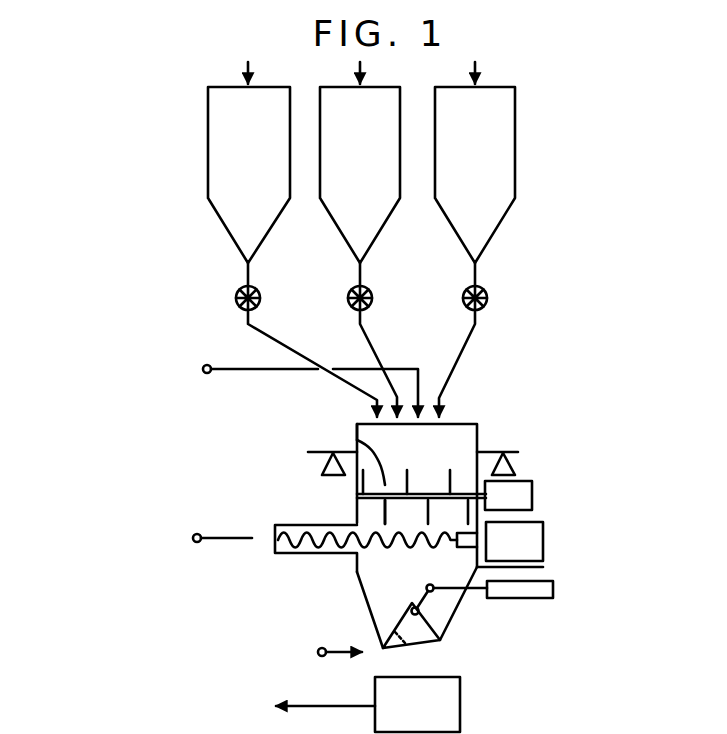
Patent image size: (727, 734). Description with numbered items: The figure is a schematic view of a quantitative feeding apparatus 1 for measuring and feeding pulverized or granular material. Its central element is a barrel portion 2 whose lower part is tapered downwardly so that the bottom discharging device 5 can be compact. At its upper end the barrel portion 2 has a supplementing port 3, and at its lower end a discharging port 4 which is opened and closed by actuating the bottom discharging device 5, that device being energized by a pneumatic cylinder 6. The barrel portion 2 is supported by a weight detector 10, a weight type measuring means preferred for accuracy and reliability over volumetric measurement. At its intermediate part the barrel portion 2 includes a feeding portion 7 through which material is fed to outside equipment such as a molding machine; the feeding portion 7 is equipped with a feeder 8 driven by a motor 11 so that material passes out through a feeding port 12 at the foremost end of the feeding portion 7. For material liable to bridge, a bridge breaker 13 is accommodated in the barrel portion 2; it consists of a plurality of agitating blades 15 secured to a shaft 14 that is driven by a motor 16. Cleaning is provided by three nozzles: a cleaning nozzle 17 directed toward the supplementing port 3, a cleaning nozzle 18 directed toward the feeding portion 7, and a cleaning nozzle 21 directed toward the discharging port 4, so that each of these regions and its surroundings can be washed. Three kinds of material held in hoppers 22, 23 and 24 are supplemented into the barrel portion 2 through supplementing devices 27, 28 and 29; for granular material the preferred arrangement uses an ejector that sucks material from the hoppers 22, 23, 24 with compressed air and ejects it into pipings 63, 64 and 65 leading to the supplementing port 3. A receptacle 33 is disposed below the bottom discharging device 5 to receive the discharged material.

The quantitative feeding apparatus 1 is at (470, 415).
The barrel portion 2 is at (478, 430).
The supplementing port 3 is at (359, 424).
The discharging port 4 is at (420, 645).
The bottom discharging device 5 is at (440, 637).
The pneumatic cylinder 6 is at (540, 592).
The feeding portion 7 is at (320, 555).
The feeder 8 is at (400, 545).
The weight detector 10 is at (320, 468).
The motor 11 is at (535, 538).
The feeding port 12 is at (275, 540).
The bridge breaker 13 is at (357, 440).
The shaft 14 is at (357, 505).
The agitating blades 15 is at (385, 517).
The motor 16 is at (532, 494).
The cleaning nozzle 17 is at (202, 369).
The cleaning nozzle 18 is at (193, 538).
The cleaning nozzle 21 is at (318, 652).
The hopper 22 is at (263, 228).
The hopper 23 is at (377, 228).
The hopper 24 is at (490, 224).
The supplementing device 27 is at (235, 298).
The supplementing device 28 is at (373, 298).
The supplementing device 29 is at (488, 298).
The receptacle 33 is at (460, 715).
The piping 63 is at (280, 342).
The piping 64 is at (372, 348).
The piping 65 is at (468, 344).